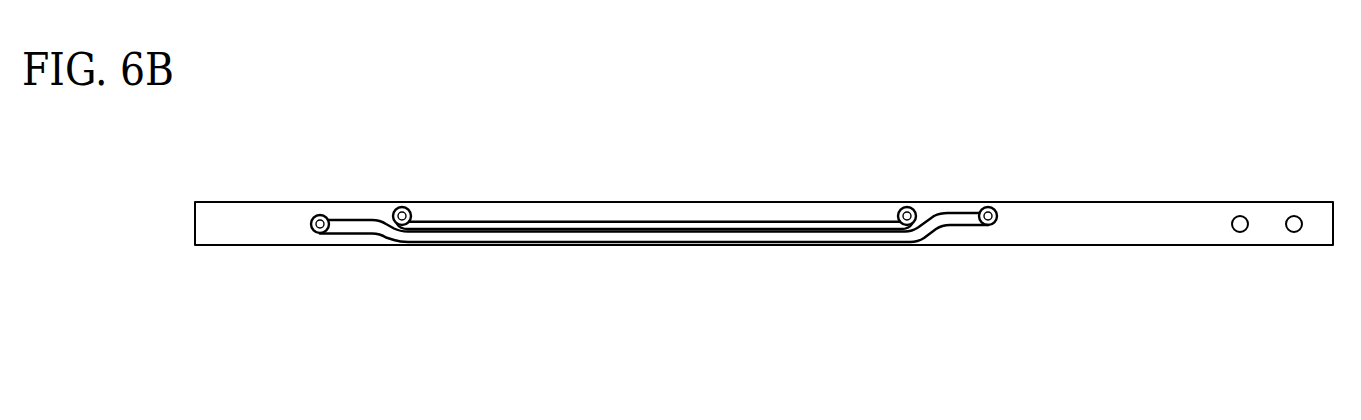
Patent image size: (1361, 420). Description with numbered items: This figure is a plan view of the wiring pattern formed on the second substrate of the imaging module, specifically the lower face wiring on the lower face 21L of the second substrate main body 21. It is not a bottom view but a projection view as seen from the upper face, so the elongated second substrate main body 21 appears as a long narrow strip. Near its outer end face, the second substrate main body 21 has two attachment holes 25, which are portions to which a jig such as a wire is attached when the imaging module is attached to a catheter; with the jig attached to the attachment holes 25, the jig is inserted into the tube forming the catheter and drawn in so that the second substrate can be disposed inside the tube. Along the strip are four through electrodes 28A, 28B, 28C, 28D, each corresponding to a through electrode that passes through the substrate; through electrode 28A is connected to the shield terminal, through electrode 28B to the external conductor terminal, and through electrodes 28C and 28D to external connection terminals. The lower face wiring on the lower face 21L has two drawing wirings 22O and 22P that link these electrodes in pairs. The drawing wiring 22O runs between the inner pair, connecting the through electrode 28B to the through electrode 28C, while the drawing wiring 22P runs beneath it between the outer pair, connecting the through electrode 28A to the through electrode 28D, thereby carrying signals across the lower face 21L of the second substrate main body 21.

The second substrate main body 21 is at (764, 223).
The lower face 21L is at (764, 165).
The drawing wiring 22O is at (708, 219).
The drawing wiring 22P is at (692, 242).
The attachment holes 25 is at (1289, 218).
The through electrode 28A is at (318, 215).
The through electrode 28B is at (398, 207).
The through electrode 28C is at (902, 207).
The through electrode 28D is at (982, 207).